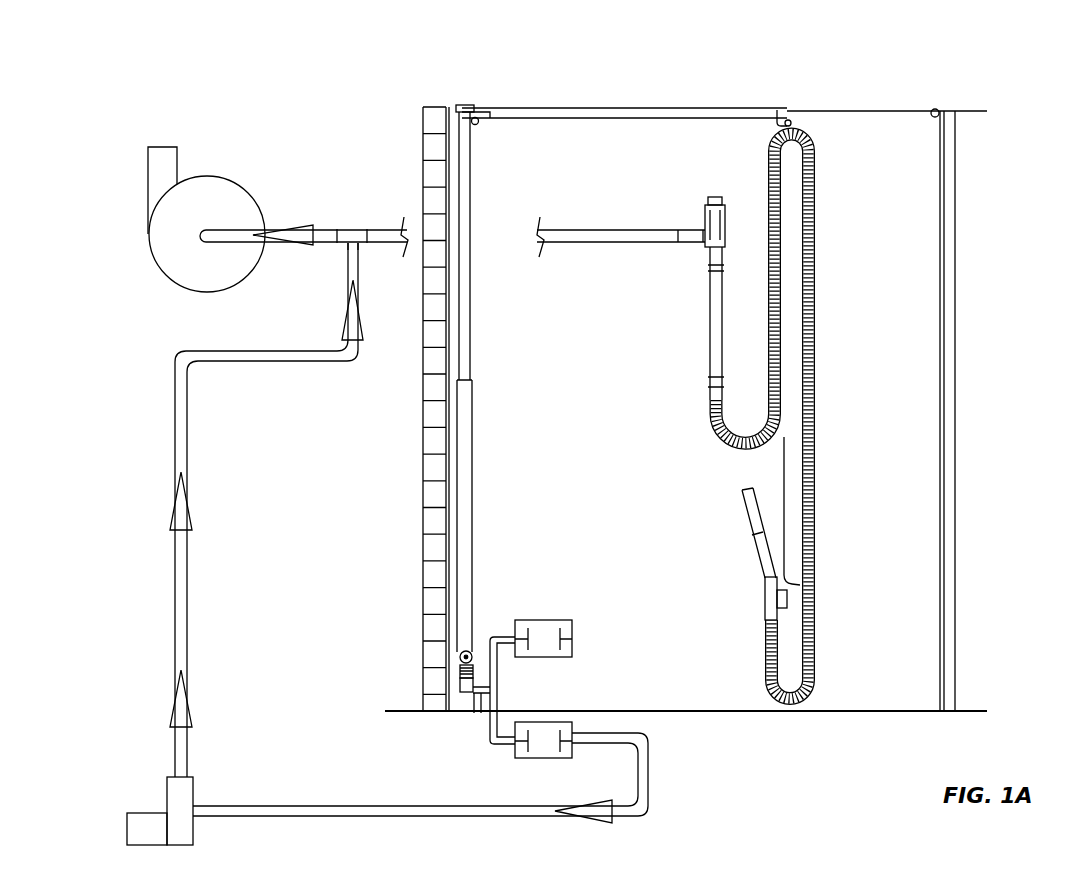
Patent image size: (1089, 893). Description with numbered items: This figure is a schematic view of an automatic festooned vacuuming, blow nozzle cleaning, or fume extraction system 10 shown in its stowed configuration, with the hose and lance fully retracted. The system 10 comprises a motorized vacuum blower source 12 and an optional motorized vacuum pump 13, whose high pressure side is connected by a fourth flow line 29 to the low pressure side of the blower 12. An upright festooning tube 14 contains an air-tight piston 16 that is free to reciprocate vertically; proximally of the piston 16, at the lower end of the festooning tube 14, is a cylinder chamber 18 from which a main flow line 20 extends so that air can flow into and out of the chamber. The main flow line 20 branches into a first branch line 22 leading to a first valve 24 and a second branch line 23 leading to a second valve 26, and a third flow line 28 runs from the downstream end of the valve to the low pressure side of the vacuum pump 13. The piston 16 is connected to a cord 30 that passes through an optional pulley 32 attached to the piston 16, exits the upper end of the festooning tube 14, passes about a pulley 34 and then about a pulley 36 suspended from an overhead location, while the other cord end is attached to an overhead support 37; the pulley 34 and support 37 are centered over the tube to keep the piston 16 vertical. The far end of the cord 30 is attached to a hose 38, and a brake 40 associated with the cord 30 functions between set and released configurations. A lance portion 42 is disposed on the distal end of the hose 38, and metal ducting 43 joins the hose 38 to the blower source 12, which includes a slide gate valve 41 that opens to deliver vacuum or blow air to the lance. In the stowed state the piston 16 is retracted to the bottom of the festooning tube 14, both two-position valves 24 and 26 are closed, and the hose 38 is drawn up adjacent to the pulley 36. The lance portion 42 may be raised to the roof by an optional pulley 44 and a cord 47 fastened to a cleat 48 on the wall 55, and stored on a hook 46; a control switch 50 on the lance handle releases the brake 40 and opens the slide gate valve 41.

The festooned vacuuming, blow nozzle cleaning, or fume extraction system 10 is at (998, 203).
The motorized vacuum blower source 12 is at (207, 176).
The motorized vacuum pump 13 is at (193, 785).
The festooning tube 14 is at (472, 453).
The piston 16 is at (472, 667).
The cylinder chamber 18 is at (460, 697).
The main flow line 20 is at (480, 713).
The first branch line 22 is at (507, 737).
The second branch line 23 is at (502, 637).
The first valve 24 is at (573, 725).
The second valve 26 is at (560, 620).
The third flow line 28 is at (328, 805).
The fourth flow line 29 is at (187, 395).
The cord 30 is at (470, 268).
The pulley 32 is at (460, 655).
The pulley 34 is at (478, 124).
The pulley 36 is at (778, 118).
The overhead support 37 is at (463, 107).
The hose 38 is at (817, 200).
The brake 40 is at (490, 108).
The slide gate valve 41 is at (710, 197).
The lance portion 42 is at (763, 570).
The metal ducting 43 is at (390, 243).
The pulley 44 is at (935, 109).
The hook 46 is at (803, 583).
The cord 47 is at (782, 467).
The cleat 48 is at (940, 552).
The control switch 50 is at (765, 627).
The wall 55 is at (423, 138).